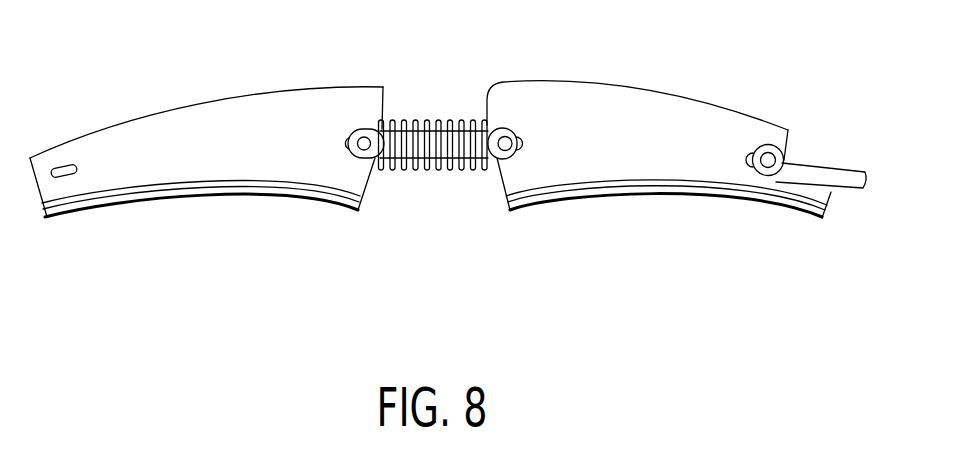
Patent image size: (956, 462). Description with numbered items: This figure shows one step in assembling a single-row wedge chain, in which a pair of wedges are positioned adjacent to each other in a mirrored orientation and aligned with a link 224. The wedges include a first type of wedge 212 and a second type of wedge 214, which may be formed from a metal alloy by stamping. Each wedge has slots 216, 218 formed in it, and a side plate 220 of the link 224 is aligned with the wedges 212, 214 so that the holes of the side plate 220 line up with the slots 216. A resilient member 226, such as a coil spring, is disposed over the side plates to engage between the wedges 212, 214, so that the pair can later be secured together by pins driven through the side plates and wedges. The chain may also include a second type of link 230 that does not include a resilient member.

The first type of wedge 212 is at (652, 113).
The second type of wedge 214 is at (197, 128).
The slot 216 is at (347, 131).
The slot 218 is at (55, 165).
The side plate 220 is at (434, 151).
The link 224 is at (481, 264).
The resilient member 226 is at (420, 169).
The second type of link 230 is at (825, 182).